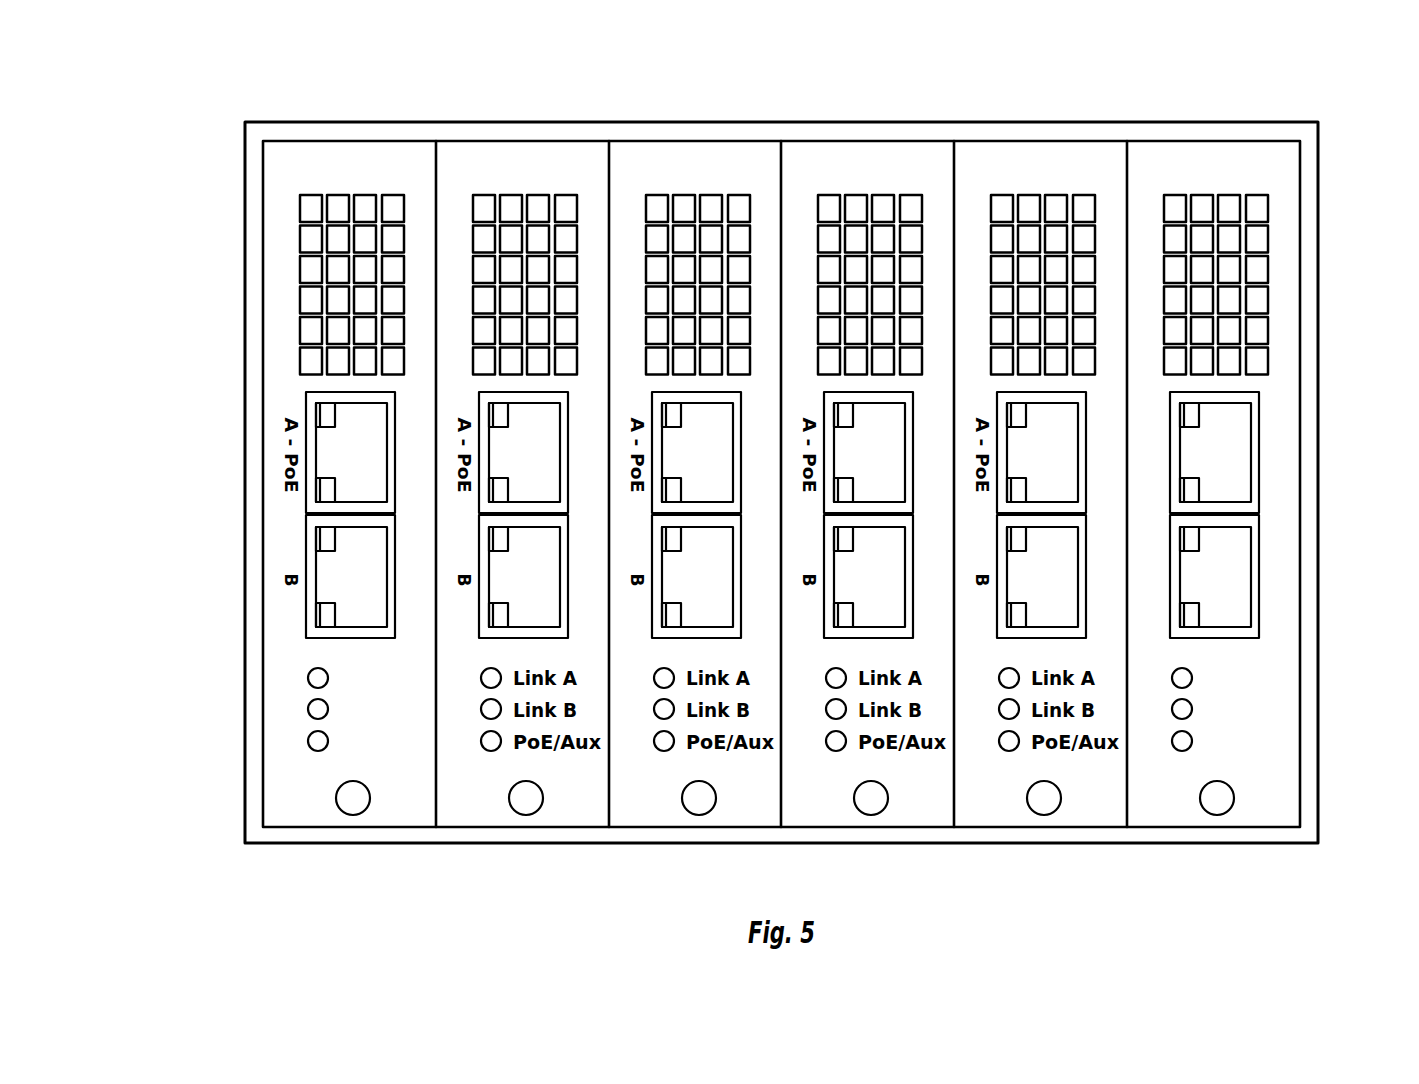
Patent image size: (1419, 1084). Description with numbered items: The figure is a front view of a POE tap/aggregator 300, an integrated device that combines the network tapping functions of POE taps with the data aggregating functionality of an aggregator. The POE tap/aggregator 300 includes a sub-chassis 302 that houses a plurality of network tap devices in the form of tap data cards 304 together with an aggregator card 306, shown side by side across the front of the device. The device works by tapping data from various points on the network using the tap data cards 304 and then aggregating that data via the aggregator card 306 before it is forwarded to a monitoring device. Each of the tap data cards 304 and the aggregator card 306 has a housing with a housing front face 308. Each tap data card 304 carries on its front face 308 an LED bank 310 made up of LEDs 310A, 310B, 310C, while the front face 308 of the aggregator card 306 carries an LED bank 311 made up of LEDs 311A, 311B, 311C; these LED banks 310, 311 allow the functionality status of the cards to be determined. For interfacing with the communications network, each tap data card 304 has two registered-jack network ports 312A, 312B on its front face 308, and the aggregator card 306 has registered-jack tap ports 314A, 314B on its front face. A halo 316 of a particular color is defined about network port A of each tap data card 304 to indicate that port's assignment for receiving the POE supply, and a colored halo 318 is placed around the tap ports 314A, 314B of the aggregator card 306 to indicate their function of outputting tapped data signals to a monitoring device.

The POE tap/aggregator 300 is at (188, 461).
The sub-chassis 302 is at (245, 198).
The tap data cards 304 is at (420, 125).
The aggregator card 306 is at (1212, 130).
The housing front face 308 is at (747, 792).
The LED bank 310 is at (311, 764).
The LED 310A is at (308, 678).
The LED 310B is at (308, 709).
The LED 310C is at (308, 741).
The LED bank 311 is at (1178, 764).
The LED 311A is at (1190, 683).
The LED 311B is at (1190, 715).
The LED 311C is at (1190, 747).
The RJ-45 network port 312A is at (327, 437).
The RJ-45 network port 312B is at (327, 565).
The RJ-45 tap port 314A is at (1215, 453).
The RJ-45 tap port 314B is at (1215, 577).
The halo 316 is at (466, 416).
The colored halo 318 is at (1215, 390).